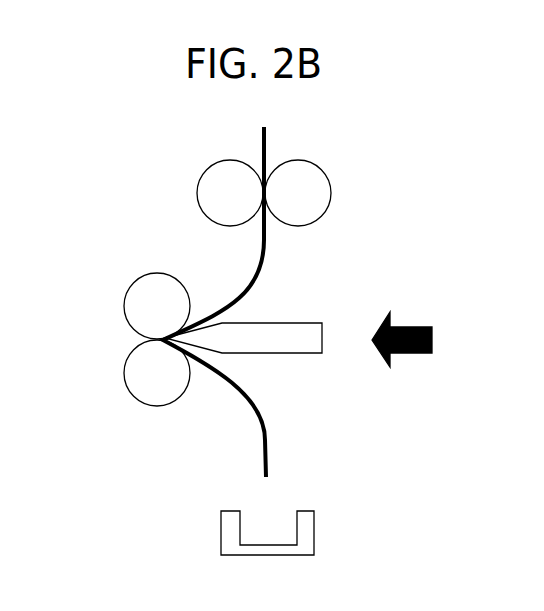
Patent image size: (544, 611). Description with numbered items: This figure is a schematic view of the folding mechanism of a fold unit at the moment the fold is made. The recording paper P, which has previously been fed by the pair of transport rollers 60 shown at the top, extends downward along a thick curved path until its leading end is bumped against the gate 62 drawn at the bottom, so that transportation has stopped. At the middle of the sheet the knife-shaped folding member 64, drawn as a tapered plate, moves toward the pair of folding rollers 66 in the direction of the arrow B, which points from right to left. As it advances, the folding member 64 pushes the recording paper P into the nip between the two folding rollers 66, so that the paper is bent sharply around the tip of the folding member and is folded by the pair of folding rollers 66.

The recording paper P is at (265, 140).
The pair of transport rollers 60 is at (331, 190).
The gate 62 is at (314, 532).
The knife-shaped folding member 64 is at (294, 323).
The pair of folding rollers 66 is at (152, 406).
The arrow B is at (402, 332).